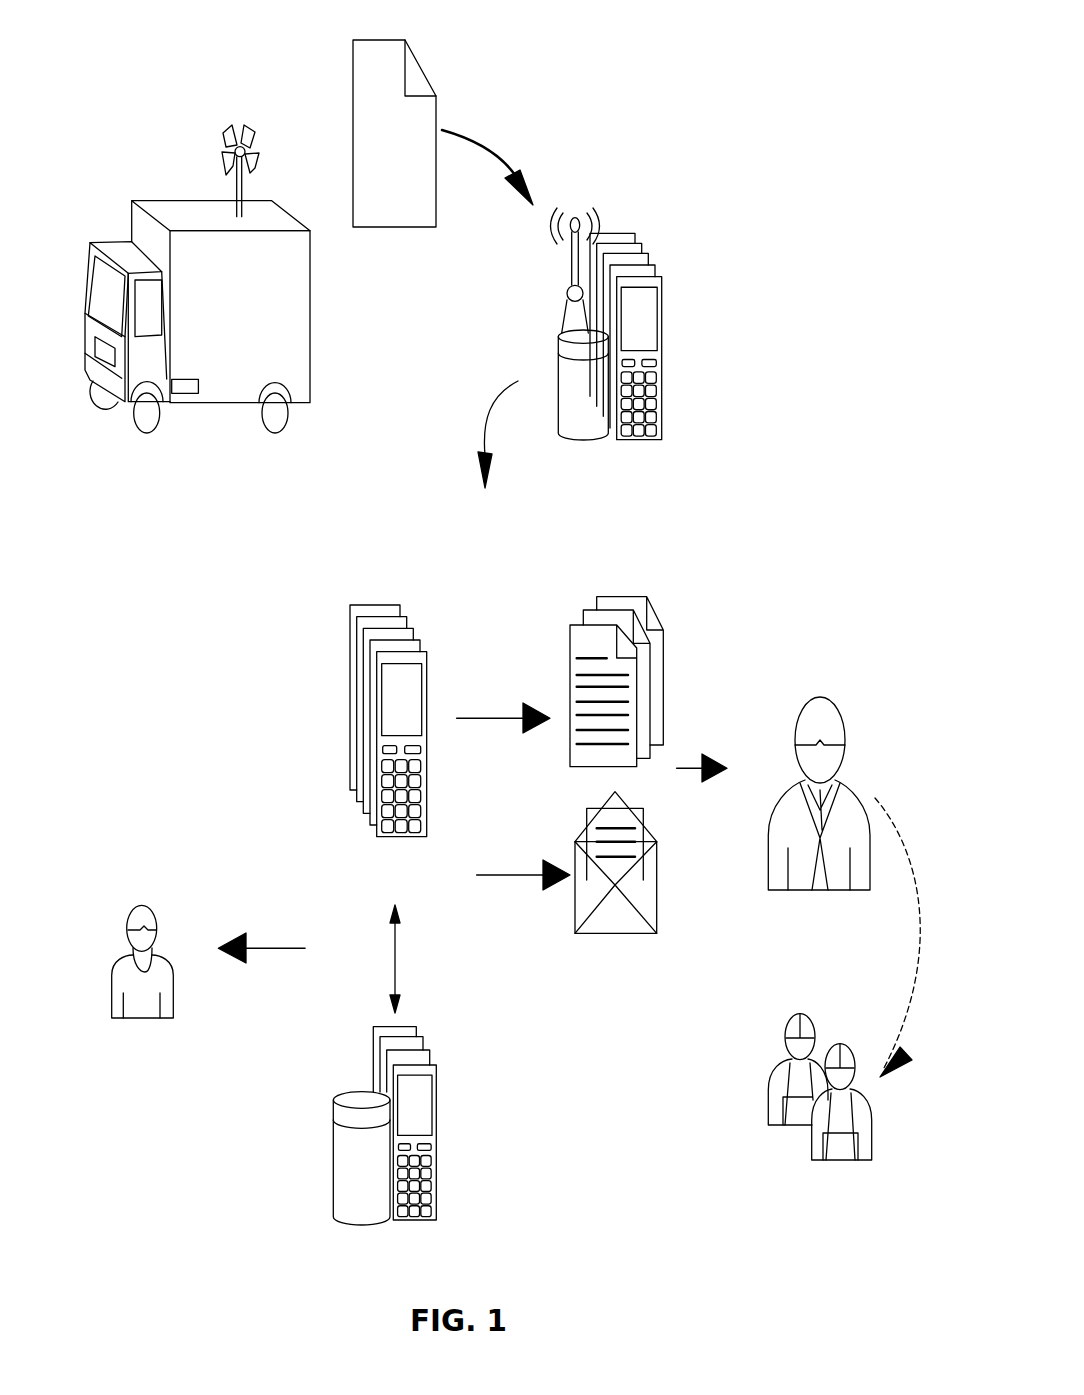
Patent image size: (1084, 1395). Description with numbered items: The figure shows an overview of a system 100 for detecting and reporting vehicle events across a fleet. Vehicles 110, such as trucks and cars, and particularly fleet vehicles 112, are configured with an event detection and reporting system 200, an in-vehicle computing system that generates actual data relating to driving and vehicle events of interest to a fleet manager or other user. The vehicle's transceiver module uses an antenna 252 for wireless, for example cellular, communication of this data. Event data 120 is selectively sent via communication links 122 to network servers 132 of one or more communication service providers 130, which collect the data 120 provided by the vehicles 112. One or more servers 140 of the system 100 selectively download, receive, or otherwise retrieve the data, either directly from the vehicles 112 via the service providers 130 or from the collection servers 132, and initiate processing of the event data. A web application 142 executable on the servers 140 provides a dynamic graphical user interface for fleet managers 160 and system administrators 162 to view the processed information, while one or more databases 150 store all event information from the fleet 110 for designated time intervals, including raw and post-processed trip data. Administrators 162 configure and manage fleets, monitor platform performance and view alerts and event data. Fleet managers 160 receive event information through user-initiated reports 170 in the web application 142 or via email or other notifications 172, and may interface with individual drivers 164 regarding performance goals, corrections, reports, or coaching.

The system 100 is at (133, 1202).
The vehicles 110 is at (208, 86).
The fleet vehicles 112 is at (170, 198).
The event data 120 is at (466, 91).
The communication links 122 is at (531, 124).
The service providers 130 is at (681, 240).
The network servers 132 is at (662, 333).
The servers 140 is at (348, 602).
The web application 142 is at (340, 783).
The databases 150 is at (452, 1145).
The fleet managers 160 is at (866, 743).
The system administrators 162 is at (110, 922).
The drivers 164 is at (888, 1130).
The reports 170 is at (677, 652).
The notifications 172 is at (615, 990).
The event detection and reporting system 200 is at (185, 388).
The antenna 252 is at (257, 131).